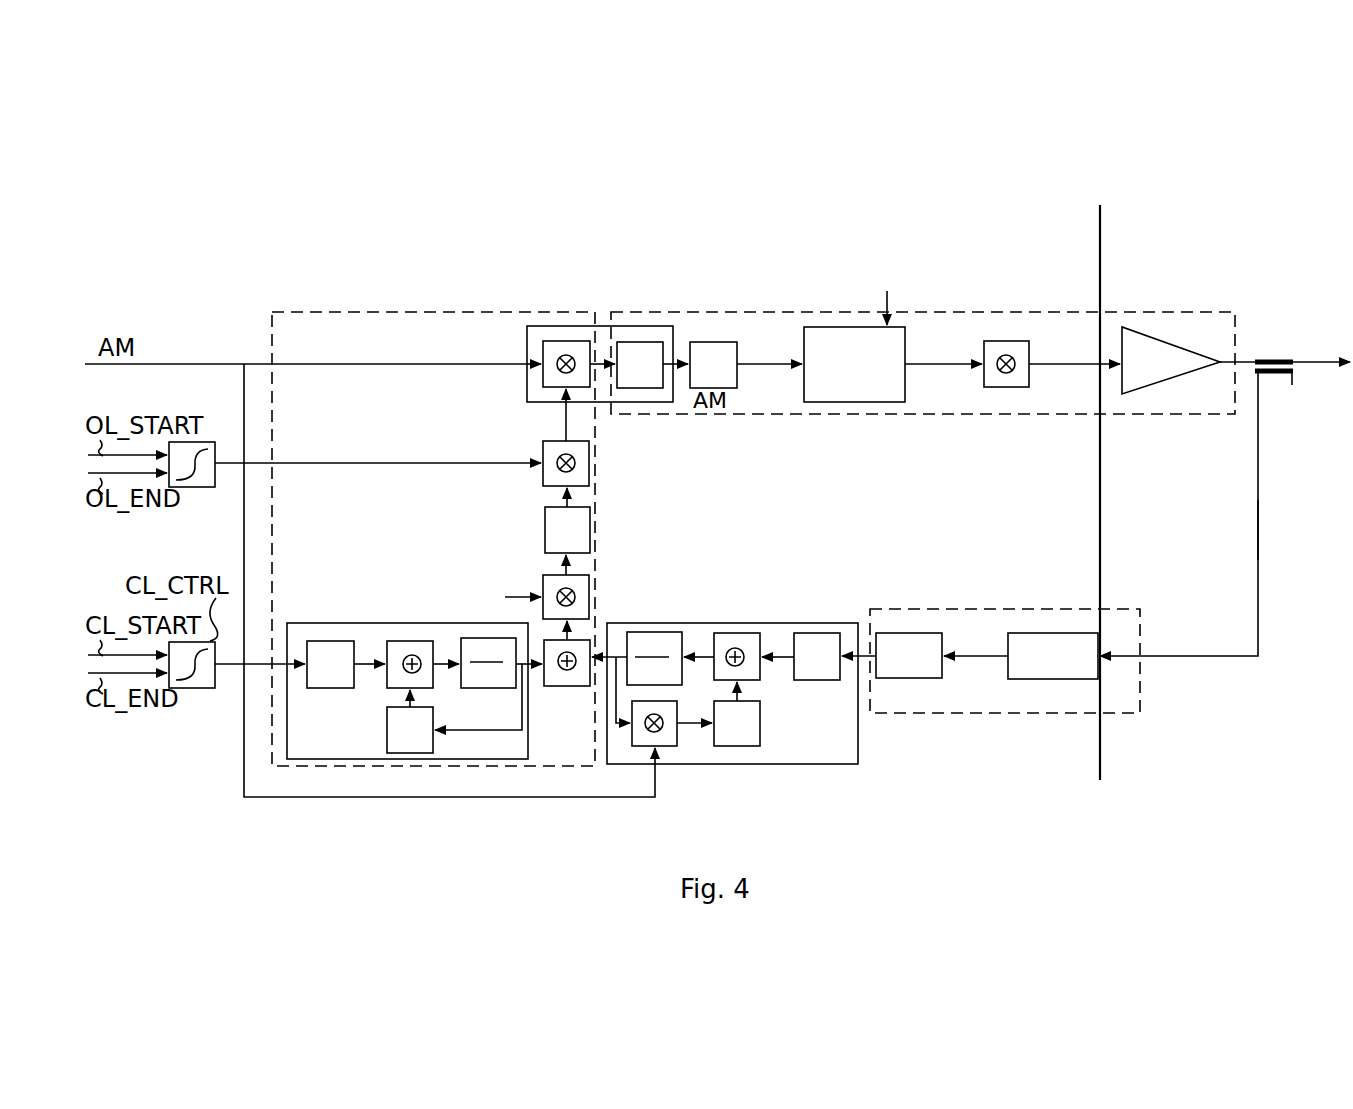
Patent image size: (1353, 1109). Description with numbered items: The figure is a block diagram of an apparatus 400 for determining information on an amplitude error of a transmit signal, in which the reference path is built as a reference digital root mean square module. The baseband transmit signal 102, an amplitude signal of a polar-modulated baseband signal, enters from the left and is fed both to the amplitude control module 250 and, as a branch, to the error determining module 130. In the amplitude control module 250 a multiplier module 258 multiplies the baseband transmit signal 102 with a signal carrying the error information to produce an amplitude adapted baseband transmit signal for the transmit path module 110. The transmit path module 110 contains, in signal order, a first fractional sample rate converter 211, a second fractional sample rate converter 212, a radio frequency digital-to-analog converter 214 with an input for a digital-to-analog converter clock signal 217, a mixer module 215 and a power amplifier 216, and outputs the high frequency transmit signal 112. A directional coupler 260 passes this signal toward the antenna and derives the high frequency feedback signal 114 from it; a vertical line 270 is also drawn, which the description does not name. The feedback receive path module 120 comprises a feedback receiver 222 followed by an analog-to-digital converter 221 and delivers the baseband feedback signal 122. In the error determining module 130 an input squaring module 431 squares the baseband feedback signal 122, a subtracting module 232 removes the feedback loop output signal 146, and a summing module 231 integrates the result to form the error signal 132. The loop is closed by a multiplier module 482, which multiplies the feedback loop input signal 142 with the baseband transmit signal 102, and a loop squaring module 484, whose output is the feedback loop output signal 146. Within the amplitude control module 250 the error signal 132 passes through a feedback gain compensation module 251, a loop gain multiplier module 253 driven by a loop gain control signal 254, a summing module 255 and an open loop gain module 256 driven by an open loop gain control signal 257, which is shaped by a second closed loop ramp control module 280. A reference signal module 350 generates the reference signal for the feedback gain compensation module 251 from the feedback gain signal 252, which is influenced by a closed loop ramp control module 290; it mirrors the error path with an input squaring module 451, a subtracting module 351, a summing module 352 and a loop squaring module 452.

The apparatus for determining information on an amplitude error of a transmit signal 400 is at (860, 212).
The baseband transmit signal 102 is at (375, 364).
The transmit path module 110 is at (1210, 310).
The high frequency transmit signal 112 is at (1316, 360).
The high frequency feedback signal 114 is at (1258, 575).
The feedback receive path module 120 is at (985, 609).
The baseband feedback signal 122 is at (862, 632).
The error determining module 130 is at (705, 623).
The error signal 132 is at (603, 638).
The feedback loop input signal 142 is at (612, 712).
The feedback loop output signal 146 is at (740, 683).
The first fractional sample rate converter 211 is at (637, 342).
The second fractional sample rate converter 212 is at (708, 342).
The radio frequency digital-to-analog converter 214 is at (818, 327).
The mixer module 215 is at (1003, 387).
The power amplifier 216 is at (1152, 394).
The digital-to-analog converter clock signal 217 is at (887, 293).
The analog-to-digital converter 221 is at (912, 678).
The feedback receiver 222 is at (1040, 679).
The summing module 231 is at (652, 632).
The subtracting module 232 is at (745, 633).
The amplitude control module 250 is at (330, 312).
The feedback gain compensation module 251 is at (544, 645).
The feedback gain signal 252 is at (225, 664).
The loop gain multiplier module 253 is at (543, 580).
The loop gain control signal 254 is at (510, 597).
The summing module 255 is at (545, 515).
The open loop gain module 256 is at (543, 450).
The open loop gain control signal 257 is at (430, 463).
The multiplier module 258 is at (530, 355).
The directional coupler 260 is at (1270, 372).
The chip boundary 270 is at (1098, 243).
The second closed loop ramp control module 280 is at (195, 487).
The closed loop ramp control module 290 is at (185, 688).
The reference signal module 350 is at (362, 759).
The subtracting module 351 is at (410, 641).
The summing module 352 is at (488, 688).
The input squaring module 431 is at (820, 633).
The input squaring module 451 is at (320, 688).
The loop squaring module 452 is at (412, 753).
The multiplier module 482 is at (665, 746).
The loop squaring module 484 is at (750, 746).